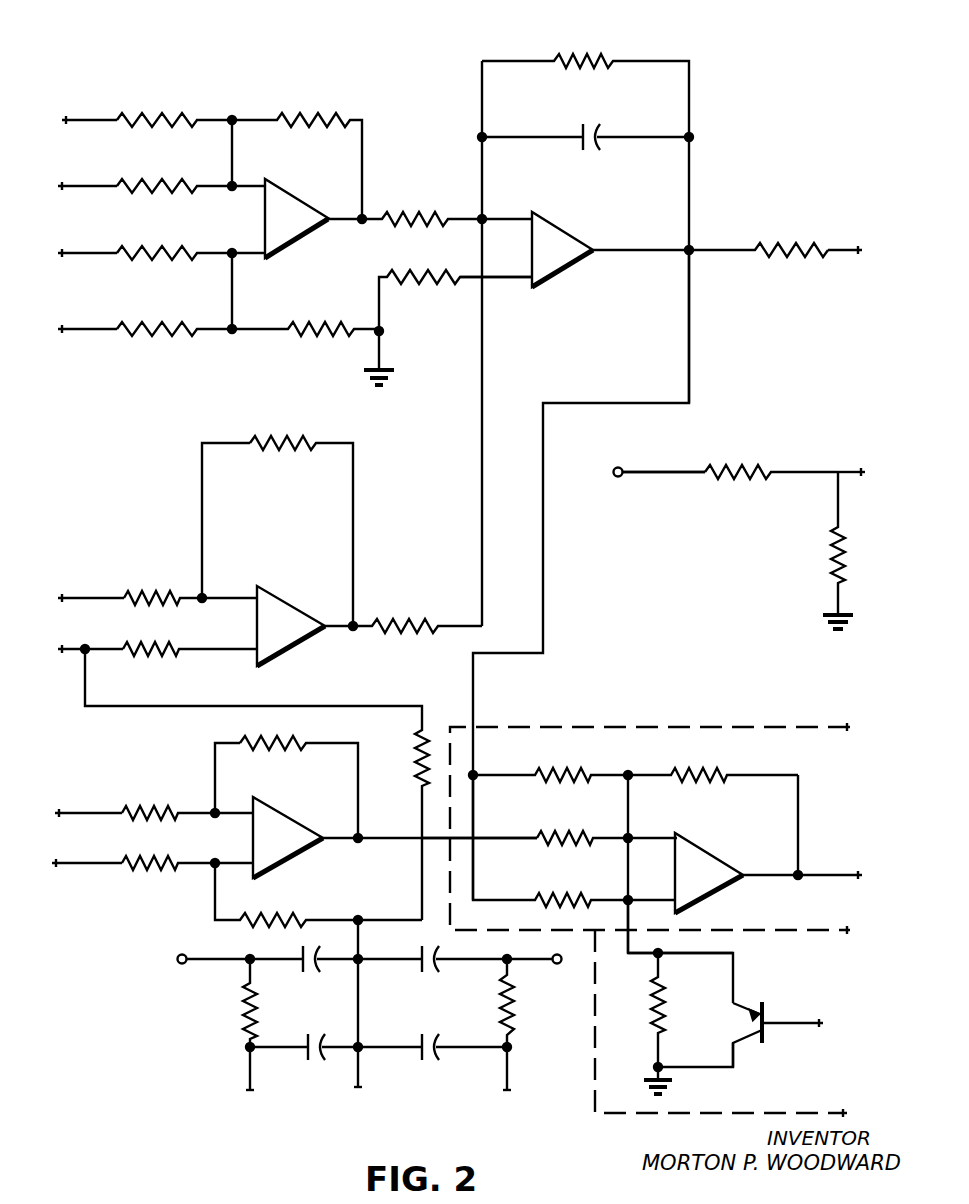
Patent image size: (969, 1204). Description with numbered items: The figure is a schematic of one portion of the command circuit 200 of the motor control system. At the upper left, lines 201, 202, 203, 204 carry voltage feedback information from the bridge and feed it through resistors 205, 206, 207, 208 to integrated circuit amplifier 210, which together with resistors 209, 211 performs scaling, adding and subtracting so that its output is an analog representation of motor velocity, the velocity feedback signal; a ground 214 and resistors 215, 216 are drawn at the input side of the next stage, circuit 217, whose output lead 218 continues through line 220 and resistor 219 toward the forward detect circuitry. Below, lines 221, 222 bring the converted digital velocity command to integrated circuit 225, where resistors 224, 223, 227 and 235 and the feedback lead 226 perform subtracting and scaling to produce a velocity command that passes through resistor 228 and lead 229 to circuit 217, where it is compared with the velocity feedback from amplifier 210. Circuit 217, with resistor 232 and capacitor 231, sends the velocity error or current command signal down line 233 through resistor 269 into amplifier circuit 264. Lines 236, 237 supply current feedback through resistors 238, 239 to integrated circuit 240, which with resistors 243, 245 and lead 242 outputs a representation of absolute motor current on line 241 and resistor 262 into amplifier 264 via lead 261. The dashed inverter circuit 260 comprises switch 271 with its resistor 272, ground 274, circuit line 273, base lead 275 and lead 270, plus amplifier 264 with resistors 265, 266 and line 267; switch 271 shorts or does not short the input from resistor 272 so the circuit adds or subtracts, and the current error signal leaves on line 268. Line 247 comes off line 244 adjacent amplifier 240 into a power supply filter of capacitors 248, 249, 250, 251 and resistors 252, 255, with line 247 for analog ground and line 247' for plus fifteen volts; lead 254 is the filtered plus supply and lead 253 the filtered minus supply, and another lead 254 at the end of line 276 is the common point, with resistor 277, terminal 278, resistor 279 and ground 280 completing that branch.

The command circuit 200 is at (316, 42).
The line 201 is at (108, 118).
The line 202 is at (72, 184).
The line 203 is at (104, 232).
The line 204 is at (110, 308).
The resistor 205 is at (145, 116).
The resistor 206 is at (145, 184).
The resistor 207 is at (142, 248).
The resistor 208 is at (145, 324).
The resistor 209 is at (308, 116).
The integrated circuit amplifier 210 is at (288, 196).
The resistor 211 is at (301, 328).
The ground 214 is at (384, 350).
The resistor 215 is at (411, 208).
The resistor 216 is at (411, 269).
The circuit 217 is at (566, 234).
The output lead 218 is at (624, 254).
The resistor 219 is at (795, 268).
The line 220 is at (846, 246).
The line 221 is at (76, 598).
The line 222 is at (90, 632).
The resistor 223 is at (160, 632).
The resistor 224 is at (150, 589).
The integrated circuit 225 is at (277, 597).
The lead 226 is at (202, 519).
The resistor 227 is at (291, 440).
The resistor 228 is at (427, 637).
The lead 229 is at (483, 337).
The capacitor 231 is at (603, 138).
The resistor 232 is at (614, 56).
The line 233 is at (689, 337).
The resistor 235 is at (417, 747).
The line 236 is at (98, 790).
The line 237 is at (99, 871).
The resistor 238 is at (156, 785).
The resistor 239 is at (145, 872).
The integrated circuit 240 is at (292, 824).
The line 241 is at (402, 844).
The lead 242 is at (214, 752).
The resistor 243 is at (292, 750).
The line 244 is at (361, 942).
The resistor 245 is at (274, 914).
The line 247 is at (379, 1086).
The line 247' is at (225, 1068).
The capacitor 248 is at (304, 974).
The capacitor 249 is at (318, 1057).
The capacitor 250 is at (433, 970).
The capacitor 251 is at (433, 1066).
The resistor 252 is at (499, 1000).
The lead 253 is at (551, 967).
The lead 254 is at (624, 477).
The resistor 255 is at (247, 1013).
The inverter circuit 260 is at (682, 722).
The input lead 261 is at (464, 840).
The resistor 262 is at (562, 836).
The integrated amplifier circuit 264 is at (705, 852).
The resistor 265 is at (552, 773).
The resistor 266 is at (691, 773).
The line 267 is at (798, 819).
The line 268 is at (855, 881).
The resistor 269 is at (559, 894).
The lead 270 is at (628, 918).
The switch 271 is at (766, 1014).
The resistor 272 is at (665, 994).
The circuit line 273 is at (695, 1070).
The ground 274 is at (649, 1082).
The base lead 275 is at (786, 1028).
The line 276 is at (702, 467).
The resistor 277 is at (747, 480).
The terminal 278 is at (862, 450).
The resistor 279 is at (830, 557).
The ground 280 is at (822, 628).